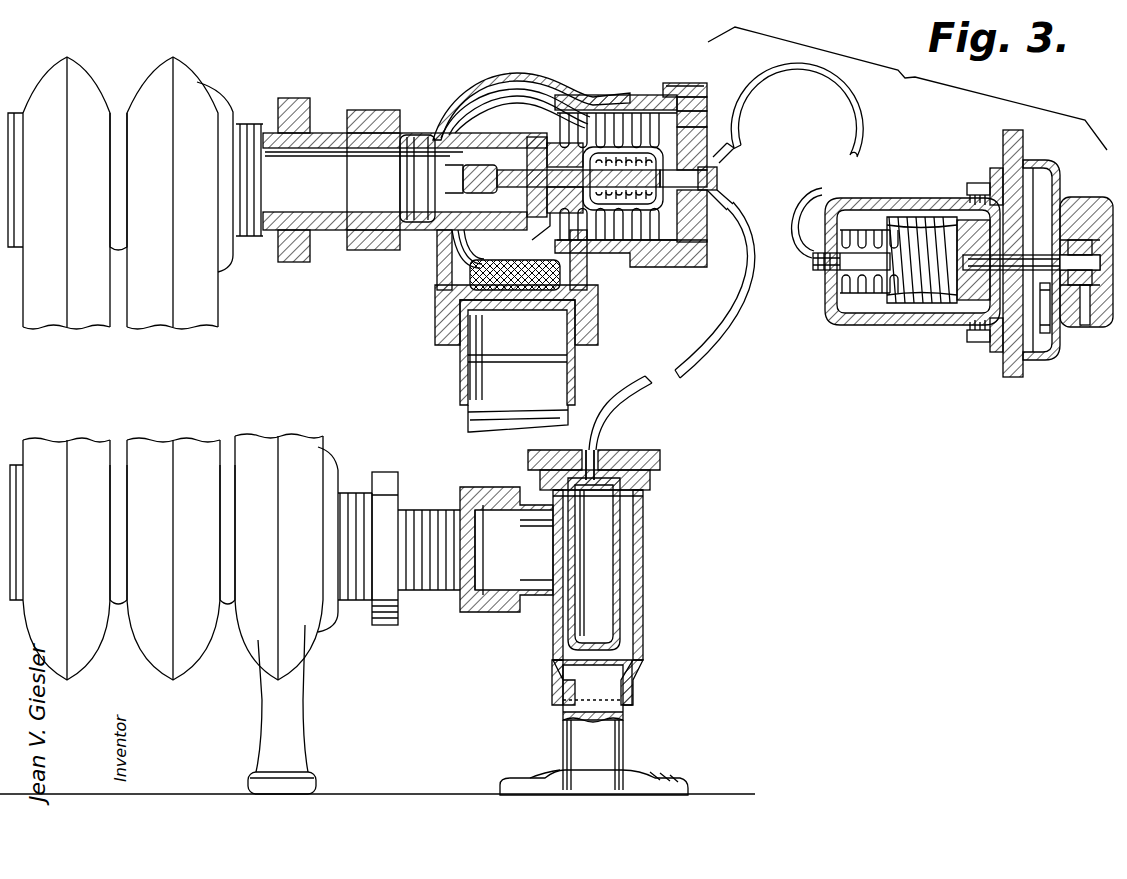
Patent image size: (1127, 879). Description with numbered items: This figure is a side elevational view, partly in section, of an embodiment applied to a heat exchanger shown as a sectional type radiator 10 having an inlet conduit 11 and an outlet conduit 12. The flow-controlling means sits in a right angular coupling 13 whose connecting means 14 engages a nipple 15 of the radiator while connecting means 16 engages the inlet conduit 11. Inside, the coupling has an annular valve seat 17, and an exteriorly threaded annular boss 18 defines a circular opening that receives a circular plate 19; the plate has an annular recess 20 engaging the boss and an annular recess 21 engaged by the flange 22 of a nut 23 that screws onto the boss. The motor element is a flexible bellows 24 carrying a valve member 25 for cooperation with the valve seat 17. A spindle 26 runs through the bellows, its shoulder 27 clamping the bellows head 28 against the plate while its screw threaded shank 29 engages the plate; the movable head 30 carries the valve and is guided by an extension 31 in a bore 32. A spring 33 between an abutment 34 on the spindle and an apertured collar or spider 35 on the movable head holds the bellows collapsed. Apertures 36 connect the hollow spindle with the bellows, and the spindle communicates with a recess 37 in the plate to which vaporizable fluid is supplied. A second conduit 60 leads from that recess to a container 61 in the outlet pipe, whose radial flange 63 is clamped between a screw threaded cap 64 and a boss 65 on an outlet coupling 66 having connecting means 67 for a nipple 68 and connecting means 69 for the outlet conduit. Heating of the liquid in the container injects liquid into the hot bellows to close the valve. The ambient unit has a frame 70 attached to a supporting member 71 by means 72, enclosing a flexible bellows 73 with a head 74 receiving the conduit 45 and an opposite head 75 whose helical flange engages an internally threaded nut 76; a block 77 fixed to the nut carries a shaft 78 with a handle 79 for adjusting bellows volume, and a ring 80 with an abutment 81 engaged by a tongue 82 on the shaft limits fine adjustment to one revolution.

The radiator 10 is at (190, 92).
The inlet conduit 11 is at (532, 415).
The outlet conduit 12 is at (618, 732).
The right angular coupling 13 is at (535, 80).
The connecting means 14 is at (388, 112).
The nipple 15 is at (330, 228).
The connecting means 16 is at (578, 378).
The annular valve seat 17 is at (488, 133).
The exteriorly threaded annular boss 18 is at (630, 96).
The circular plate 19 is at (708, 118).
The annular recess 20 is at (685, 84).
The annular recess 21 is at (708, 115).
The flange 22 is at (708, 100).
The nut 23 is at (704, 86).
The flexible bellows 24 is at (580, 244).
The valve member 25 is at (537, 137).
The spindle 26 is at (627, 184).
The shoulder 27 is at (692, 148).
The bellows head 28 is at (668, 214).
The screw threaded shank 29 is at (726, 193).
The movable head 30 is at (558, 143).
The extension 31 is at (500, 190).
The bore 32 is at (478, 165).
The spring 33 is at (623, 179).
The abutment 34 is at (560, 208).
The apertured collar or spider 35 is at (546, 231).
The apertures 36 is at (602, 179).
The recess 37 is at (718, 175).
The conduit 45 is at (866, 148).
The second conduit 60 is at (752, 262).
The container 61 is at (622, 535).
The radial flange 63 is at (648, 452).
The screw threaded cap 64 is at (655, 472).
The boss 65 is at (645, 495).
The outlet coupling 66 is at (645, 586).
The connecting means 67 is at (480, 490).
The nipple 68 is at (428, 505).
The connecting means 69 is at (632, 685).
The frame 70 is at (870, 322).
The supporting member 71 is at (1016, 377).
The attaching means 72 is at (998, 178).
The flexible bellows 73 is at (860, 290).
The head 74 is at (822, 250).
The head 75 is at (935, 305).
The internally threaded nut 76 is at (908, 217).
The block 77 is at (962, 250).
The shaft 78 is at (1081, 252).
The handle 79 is at (1092, 328).
The ring 80 is at (1058, 192).
The abutment 81 is at (1070, 215).
The tongue 82 is at (1048, 322).